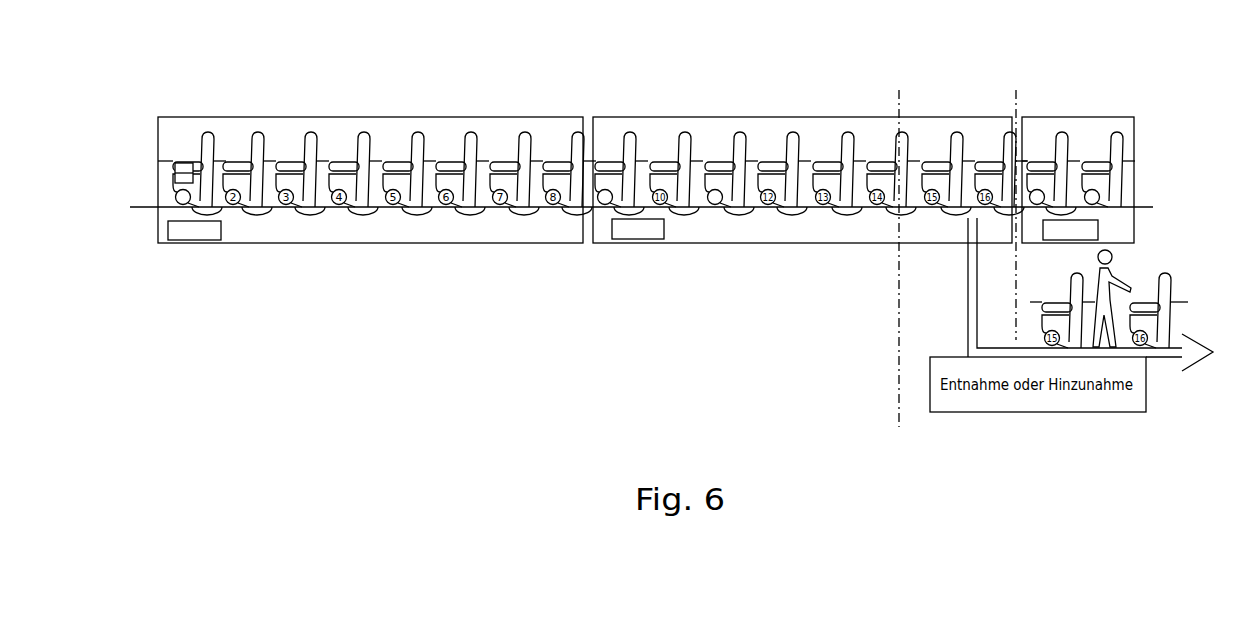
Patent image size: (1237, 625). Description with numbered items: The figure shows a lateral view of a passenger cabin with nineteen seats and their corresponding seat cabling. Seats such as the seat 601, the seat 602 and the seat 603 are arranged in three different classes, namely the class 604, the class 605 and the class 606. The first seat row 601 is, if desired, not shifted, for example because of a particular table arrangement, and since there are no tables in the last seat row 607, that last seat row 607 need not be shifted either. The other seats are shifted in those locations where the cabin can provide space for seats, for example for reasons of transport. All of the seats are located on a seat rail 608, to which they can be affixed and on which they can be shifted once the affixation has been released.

The seat 601 is at (207, 133).
The seat 602 is at (630, 133).
The seat 603 is at (1062, 133).
The class 604 is at (322, 117).
The class 605 is at (763, 117).
The class 606 is at (1040, 117).
The last seat row 607 is at (1117, 131).
The seat rail 608 is at (722, 208).